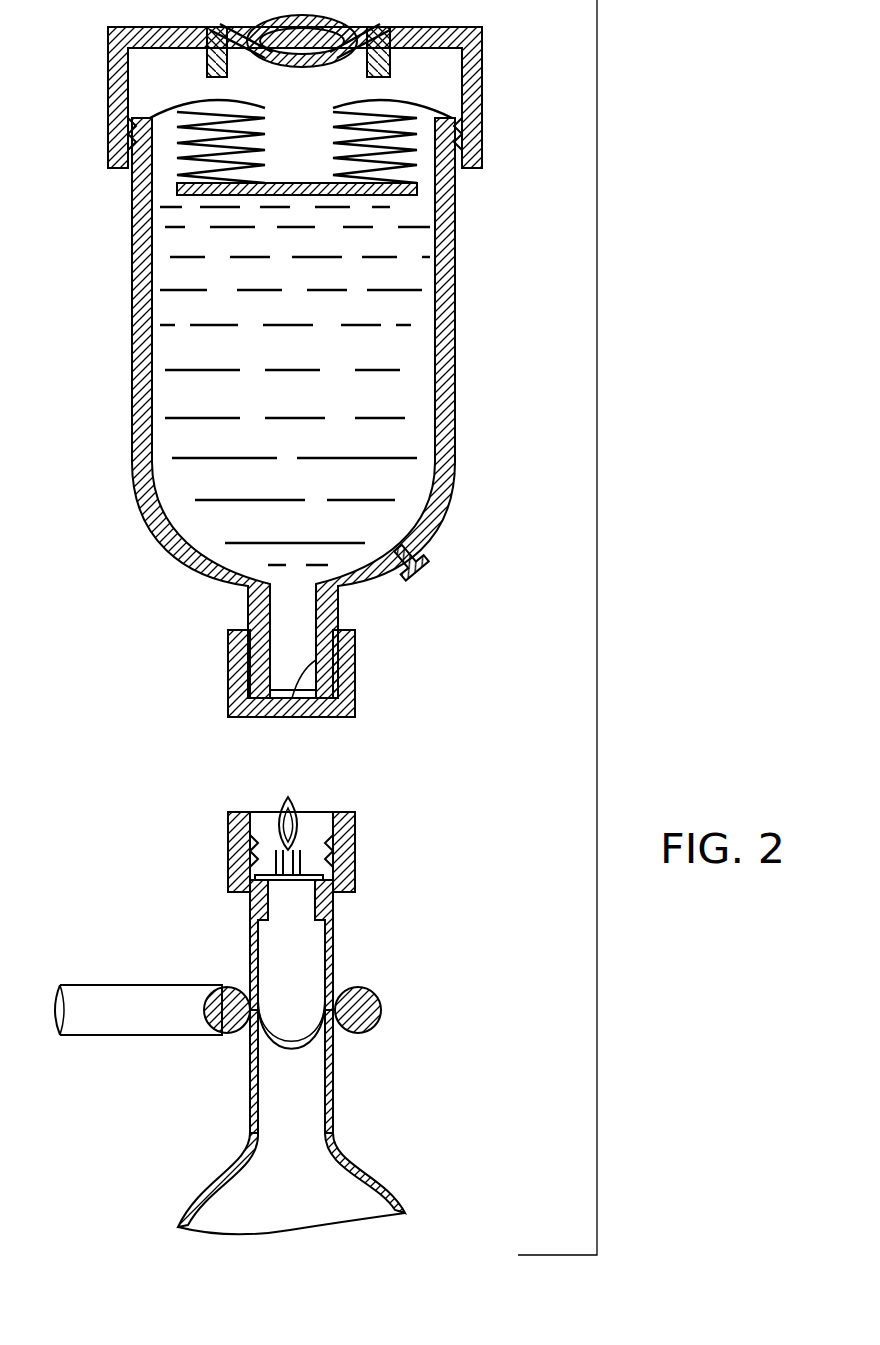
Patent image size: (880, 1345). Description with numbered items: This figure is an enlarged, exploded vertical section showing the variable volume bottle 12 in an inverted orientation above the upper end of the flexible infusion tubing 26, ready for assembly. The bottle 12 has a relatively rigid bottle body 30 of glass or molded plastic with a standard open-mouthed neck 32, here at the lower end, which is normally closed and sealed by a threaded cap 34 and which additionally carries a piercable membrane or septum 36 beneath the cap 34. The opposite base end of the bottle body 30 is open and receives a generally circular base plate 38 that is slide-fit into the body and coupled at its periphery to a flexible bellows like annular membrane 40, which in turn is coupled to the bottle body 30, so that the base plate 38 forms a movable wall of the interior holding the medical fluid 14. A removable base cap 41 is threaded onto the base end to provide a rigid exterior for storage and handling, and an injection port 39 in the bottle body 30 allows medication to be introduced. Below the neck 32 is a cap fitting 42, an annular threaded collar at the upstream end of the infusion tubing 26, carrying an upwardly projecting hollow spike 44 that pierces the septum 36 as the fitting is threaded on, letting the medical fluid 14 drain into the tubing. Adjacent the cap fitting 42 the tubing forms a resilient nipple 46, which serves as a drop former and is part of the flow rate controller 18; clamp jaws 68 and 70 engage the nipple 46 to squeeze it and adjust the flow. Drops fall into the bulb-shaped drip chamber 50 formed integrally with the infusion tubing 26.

The variable volume bottle 12 is at (500, 218).
The medical fluid 14 is at (215, 357).
The flow rate controller 18 is at (140, 1050).
The infusion tubing 26 is at (335, 1120).
The bottle body 30 is at (455, 290).
The neck 32 is at (248, 602).
The cap 34 is at (240, 702).
The piercable membrane or septum 36 is at (322, 664).
The base plate 38 is at (290, 195).
The injection port 39 is at (420, 555).
The bellows like annular membrane 40 is at (385, 118).
The base cap 41 is at (120, 30).
The cap fitting 42 is at (230, 842).
The hollow spike 44 is at (298, 798).
The resilient nipple 46 is at (250, 1087).
The drip chamber 50 is at (365, 1195).
The clamp jaw 68 is at (227, 988).
The clamp jaw 70 is at (362, 996).